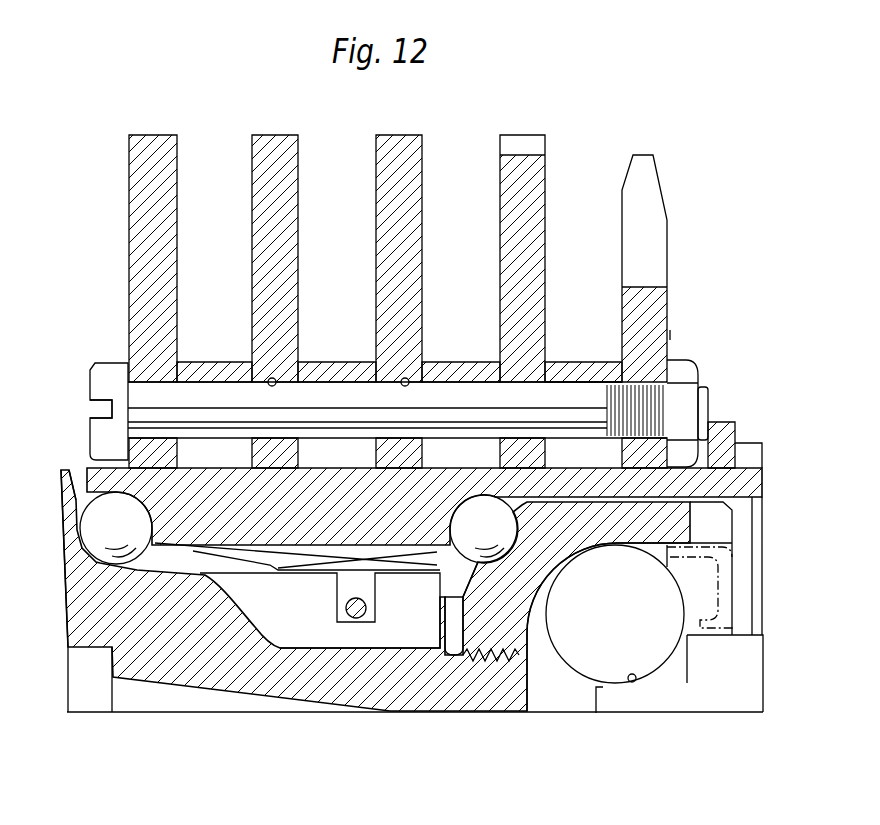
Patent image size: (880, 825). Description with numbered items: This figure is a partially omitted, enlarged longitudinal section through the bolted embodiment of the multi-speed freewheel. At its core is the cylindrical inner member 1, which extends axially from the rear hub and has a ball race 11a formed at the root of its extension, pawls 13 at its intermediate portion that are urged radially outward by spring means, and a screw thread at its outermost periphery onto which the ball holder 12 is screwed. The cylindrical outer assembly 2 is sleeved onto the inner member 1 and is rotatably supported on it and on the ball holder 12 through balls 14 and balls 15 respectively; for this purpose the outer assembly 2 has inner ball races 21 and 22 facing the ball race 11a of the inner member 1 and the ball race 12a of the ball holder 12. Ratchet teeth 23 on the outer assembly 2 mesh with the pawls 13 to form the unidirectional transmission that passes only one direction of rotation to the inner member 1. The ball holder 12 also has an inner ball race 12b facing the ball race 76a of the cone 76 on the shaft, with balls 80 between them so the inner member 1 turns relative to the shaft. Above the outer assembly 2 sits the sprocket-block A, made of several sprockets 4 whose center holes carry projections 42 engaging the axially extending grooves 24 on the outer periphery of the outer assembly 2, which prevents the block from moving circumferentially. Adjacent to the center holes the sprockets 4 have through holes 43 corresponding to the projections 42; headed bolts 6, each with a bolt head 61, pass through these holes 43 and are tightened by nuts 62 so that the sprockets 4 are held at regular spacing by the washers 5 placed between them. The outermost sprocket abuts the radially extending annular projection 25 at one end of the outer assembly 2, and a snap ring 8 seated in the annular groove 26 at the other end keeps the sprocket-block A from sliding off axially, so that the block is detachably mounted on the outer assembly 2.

The sprocket 4 is at (167, 188).
The washer 5 is at (224, 372).
The bolt 6 is at (557, 398).
The snap ring 8 is at (714, 424).
The groove 24 is at (188, 458).
The annular projection 25 is at (110, 418).
The annular groove 26 is at (738, 446).
The projection 42 is at (297, 460).
The through hole 43 is at (276, 380).
The bolt head 61 is at (106, 373).
The nut 62 is at (678, 360).
The sprocket-block A is at (672, 335).
The ball race 21 is at (143, 513).
The ball race 22 is at (457, 507).
The ball race 11a is at (100, 566).
The ball 14 is at (137, 570).
The outer assembly 2 is at (202, 555).
The ratchet teeth 23 is at (300, 560).
The inner member 1 is at (313, 700).
The pawl 13 is at (387, 605).
The ball holder 12 is at (480, 647).
The ball 15 is at (502, 653).
The ball race 12a is at (527, 615).
The inner ball race 12b is at (560, 587).
The ball race 76a is at (634, 682).
The ball 80 is at (658, 653).
The cone 76 is at (723, 700).